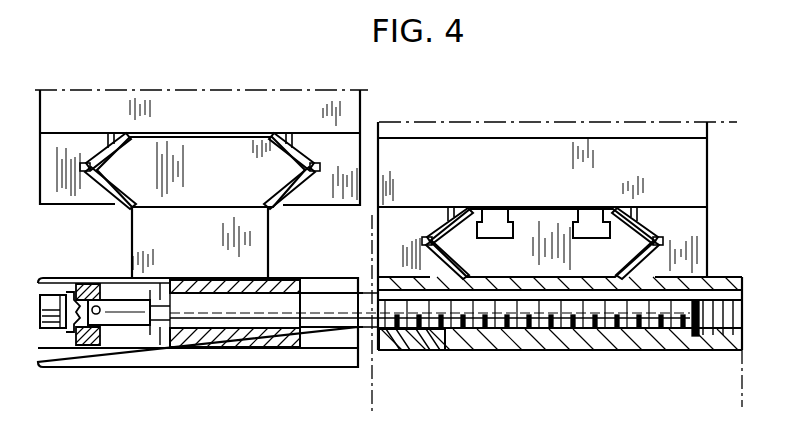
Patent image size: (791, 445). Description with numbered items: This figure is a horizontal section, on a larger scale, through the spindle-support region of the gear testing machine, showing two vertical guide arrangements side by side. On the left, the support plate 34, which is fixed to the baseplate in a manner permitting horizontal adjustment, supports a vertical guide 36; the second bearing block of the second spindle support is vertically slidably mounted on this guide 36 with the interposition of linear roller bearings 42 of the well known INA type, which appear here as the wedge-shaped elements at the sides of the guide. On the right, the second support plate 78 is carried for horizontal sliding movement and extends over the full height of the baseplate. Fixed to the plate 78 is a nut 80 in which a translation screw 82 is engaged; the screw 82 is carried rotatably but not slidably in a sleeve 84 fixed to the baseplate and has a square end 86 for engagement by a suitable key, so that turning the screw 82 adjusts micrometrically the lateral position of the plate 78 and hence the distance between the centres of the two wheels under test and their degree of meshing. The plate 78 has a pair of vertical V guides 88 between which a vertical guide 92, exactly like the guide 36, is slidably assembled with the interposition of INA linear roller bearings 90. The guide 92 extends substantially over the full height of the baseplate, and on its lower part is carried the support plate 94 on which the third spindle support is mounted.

The support plate 34 is at (338, 358).
The vertical guide 36 is at (202, 150).
The linear roller bearings 42 is at (105, 140).
The second support plate 78 is at (685, 340).
The nut 80 is at (420, 343).
The translation screw 82 is at (532, 350).
The sleeve 84 is at (243, 338).
The square end 86 is at (60, 328).
The vertical V guides 88 is at (404, 222).
The linear roller bearings 90 is at (449, 212).
The vertical guide 92 is at (550, 225).
The support plate 94 is at (612, 153).